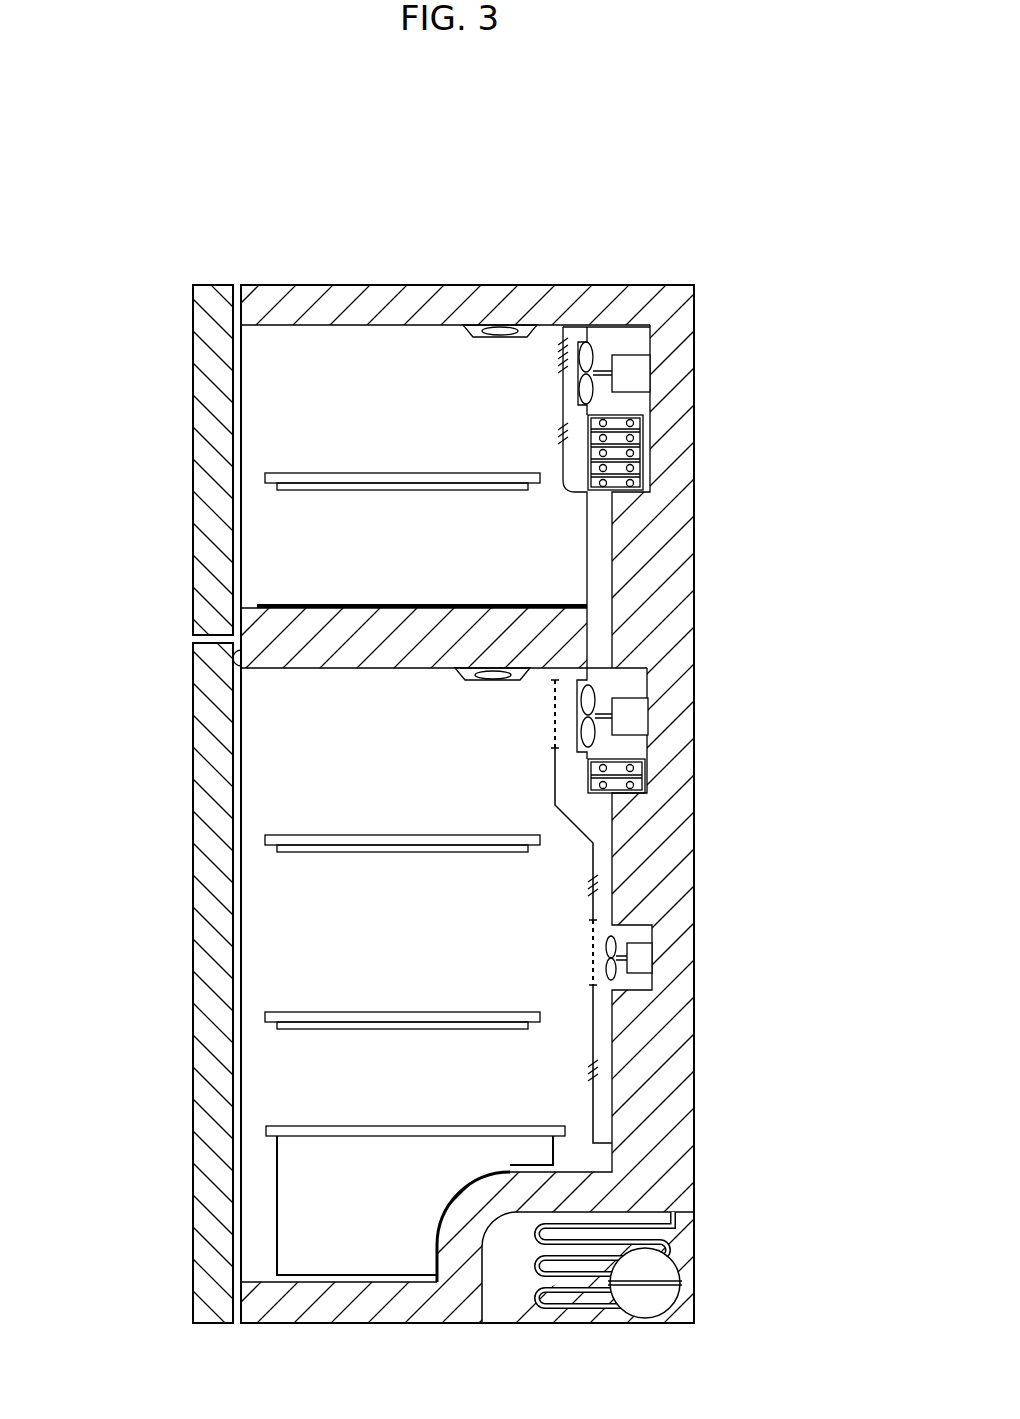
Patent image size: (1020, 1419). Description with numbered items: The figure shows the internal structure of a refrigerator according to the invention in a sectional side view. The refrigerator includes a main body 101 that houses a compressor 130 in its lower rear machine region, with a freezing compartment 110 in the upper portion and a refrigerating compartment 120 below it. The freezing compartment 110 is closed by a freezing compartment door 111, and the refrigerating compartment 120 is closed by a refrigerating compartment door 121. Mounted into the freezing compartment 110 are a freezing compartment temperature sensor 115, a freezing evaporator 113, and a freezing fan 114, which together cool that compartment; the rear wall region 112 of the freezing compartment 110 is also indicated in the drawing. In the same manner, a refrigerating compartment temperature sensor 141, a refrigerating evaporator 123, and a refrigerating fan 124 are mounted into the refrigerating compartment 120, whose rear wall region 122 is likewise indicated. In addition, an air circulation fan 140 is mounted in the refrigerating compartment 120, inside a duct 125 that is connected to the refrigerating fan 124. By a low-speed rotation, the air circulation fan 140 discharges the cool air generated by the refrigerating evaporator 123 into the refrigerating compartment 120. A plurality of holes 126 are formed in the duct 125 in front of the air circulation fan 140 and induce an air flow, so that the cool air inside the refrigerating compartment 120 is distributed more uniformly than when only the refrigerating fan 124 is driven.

The main body 101 is at (418, 285).
The freezing compartment 110 is at (302, 434).
The freezing compartment door 111 is at (193, 525).
The freezing compartment rear wall 112 is at (655, 555).
The freezing evaporator 113 is at (648, 450).
The freezing fan 114 is at (655, 372).
The freezing compartment temperature sensor 115 is at (478, 336).
The refrigerating compartment 120 is at (302, 821).
The refrigerating compartment door 121 is at (193, 943).
The refrigerating compartment rear wall 122 is at (612, 905).
The refrigerating evaporator 123 is at (650, 768).
The refrigerating fan 124 is at (655, 718).
The duct 125 is at (592, 862).
The holes 126 is at (550, 718).
The compressor 130 is at (665, 1262).
The air circulation fan 140 is at (652, 960).
The refrigerating compartment temperature sensor 141 is at (468, 676).